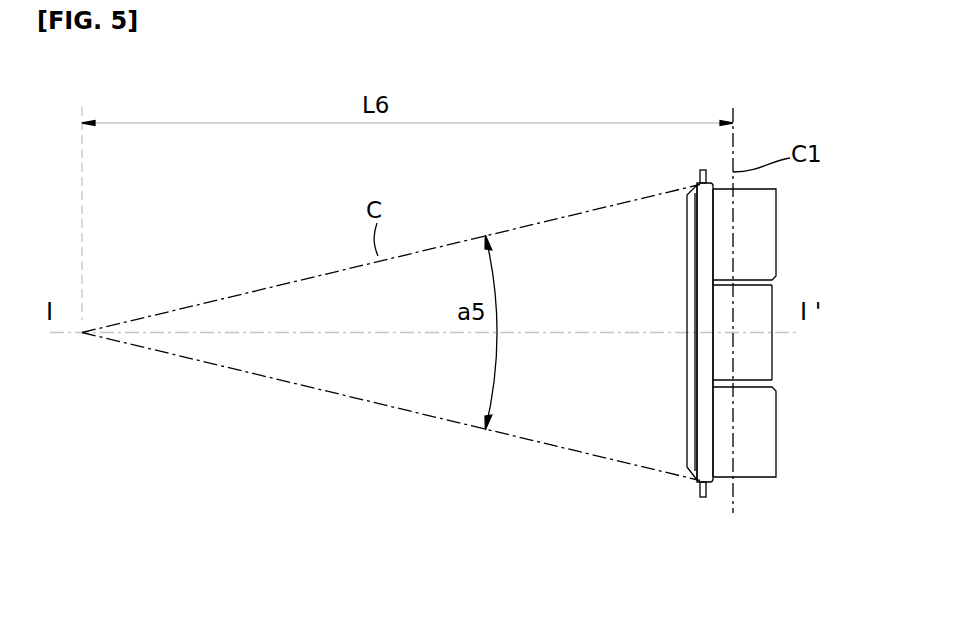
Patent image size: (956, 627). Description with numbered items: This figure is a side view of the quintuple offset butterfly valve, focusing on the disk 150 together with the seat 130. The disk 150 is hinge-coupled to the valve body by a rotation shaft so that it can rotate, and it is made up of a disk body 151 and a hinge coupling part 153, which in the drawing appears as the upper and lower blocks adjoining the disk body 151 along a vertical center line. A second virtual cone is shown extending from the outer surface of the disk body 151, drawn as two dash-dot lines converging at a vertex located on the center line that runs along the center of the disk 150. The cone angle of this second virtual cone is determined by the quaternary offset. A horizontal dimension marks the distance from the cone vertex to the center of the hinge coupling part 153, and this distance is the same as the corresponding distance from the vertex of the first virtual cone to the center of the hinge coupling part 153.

The seat 130 is at (703, 497).
The disk 150 is at (786, 505).
The disk body 151 is at (695, 388).
The hinge coupling part 153 is at (758, 238).